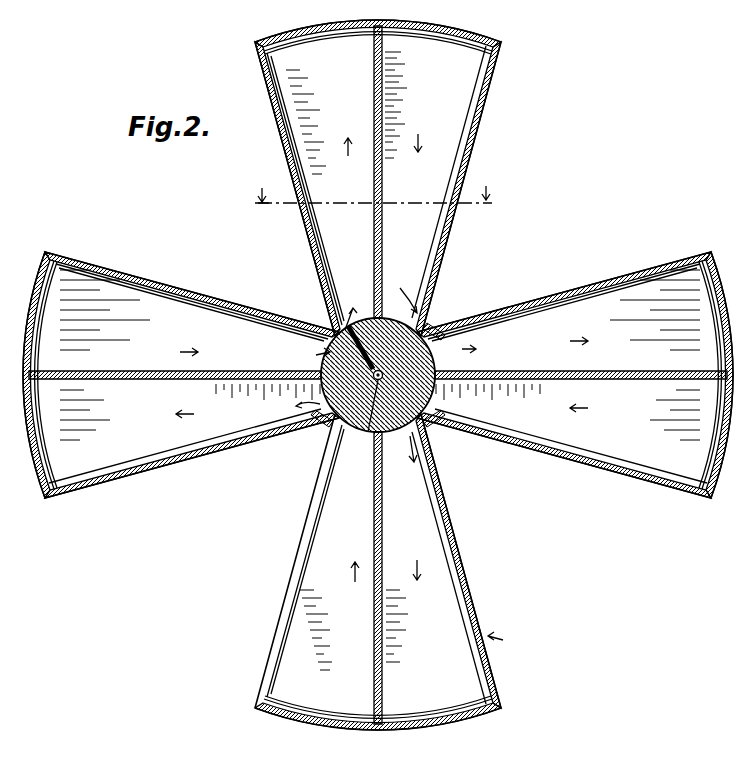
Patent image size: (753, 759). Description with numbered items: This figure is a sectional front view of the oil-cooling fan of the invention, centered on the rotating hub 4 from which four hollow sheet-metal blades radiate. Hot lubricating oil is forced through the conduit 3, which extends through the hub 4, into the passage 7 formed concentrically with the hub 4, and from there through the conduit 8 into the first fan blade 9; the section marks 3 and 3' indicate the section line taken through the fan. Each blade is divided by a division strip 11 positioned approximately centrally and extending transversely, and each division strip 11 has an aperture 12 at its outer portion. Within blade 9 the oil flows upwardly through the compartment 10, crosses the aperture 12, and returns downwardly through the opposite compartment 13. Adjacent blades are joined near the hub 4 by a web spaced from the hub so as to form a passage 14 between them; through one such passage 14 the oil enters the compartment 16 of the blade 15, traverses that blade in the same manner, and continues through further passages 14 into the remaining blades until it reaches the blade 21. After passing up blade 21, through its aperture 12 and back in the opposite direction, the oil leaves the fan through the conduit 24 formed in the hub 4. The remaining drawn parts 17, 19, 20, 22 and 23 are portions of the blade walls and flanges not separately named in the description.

The conduit 3 is at (371, 200).
The section indicator 3' is at (503, 633).
The hub 4 is at (330, 388).
The passage 7 is at (366, 436).
The conduit 8 is at (371, 316).
The fan blade 9 is at (304, 242).
The compartment 10 is at (315, 163).
The division strip 11 is at (383, 181).
The aperture 12 is at (393, 55).
The compartment 13 is at (455, 139).
The passage 14 is at (436, 325).
The fan blade 15 is at (548, 288).
The compartment 16 is at (606, 300).
The flange 17 is at (623, 447).
The flange 19 is at (440, 613).
The arm chamber 20 is at (315, 608).
The fan blade 21 is at (216, 456).
The outer side wall of arm 22 is at (126, 458).
The arm chamber wall 23 is at (151, 312).
The conduit 24 is at (314, 356).